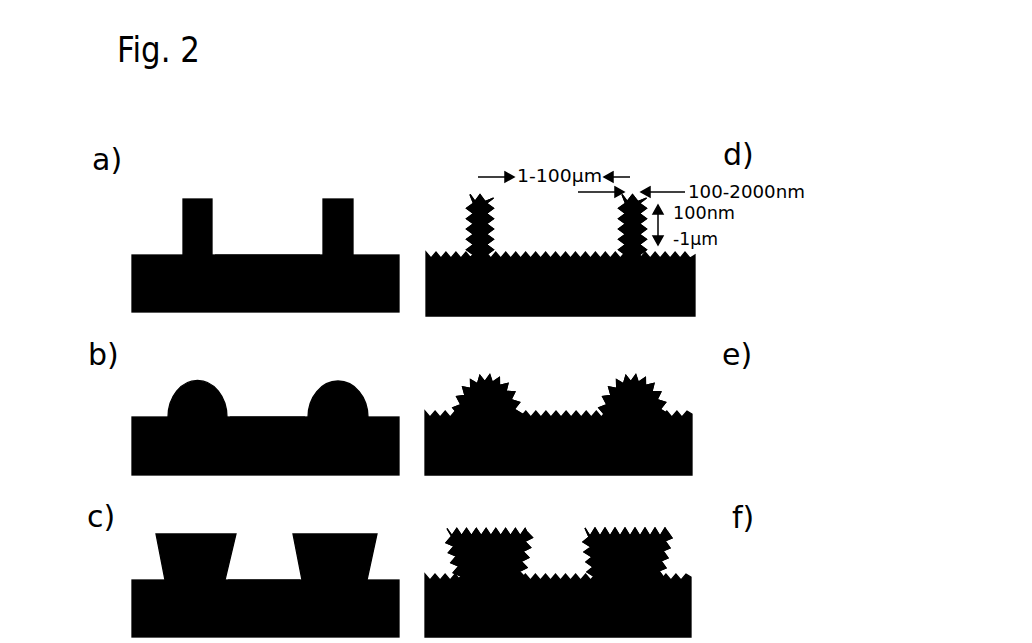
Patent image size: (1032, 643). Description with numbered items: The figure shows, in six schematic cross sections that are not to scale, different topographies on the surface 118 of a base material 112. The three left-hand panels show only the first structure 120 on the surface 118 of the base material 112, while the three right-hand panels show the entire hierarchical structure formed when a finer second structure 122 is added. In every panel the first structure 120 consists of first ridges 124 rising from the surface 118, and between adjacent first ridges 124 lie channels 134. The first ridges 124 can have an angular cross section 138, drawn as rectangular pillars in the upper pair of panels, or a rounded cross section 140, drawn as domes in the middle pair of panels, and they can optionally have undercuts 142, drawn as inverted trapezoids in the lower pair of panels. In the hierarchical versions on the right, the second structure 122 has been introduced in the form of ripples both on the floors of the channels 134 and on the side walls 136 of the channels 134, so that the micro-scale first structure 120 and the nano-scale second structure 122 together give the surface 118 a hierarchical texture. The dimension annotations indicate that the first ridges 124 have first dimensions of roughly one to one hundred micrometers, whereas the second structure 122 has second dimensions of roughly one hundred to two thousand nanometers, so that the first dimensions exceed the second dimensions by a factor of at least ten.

The base material 112 is at (132, 283).
The surface 118 is at (248, 255).
The first structure 120 is at (408, 355).
The first ridges 124 is at (408, 355).
The channels 134 is at (293, 227).
The angular cross section 138 is at (196, 199).
The rounded cross section 140 is at (197, 380).
The undercuts 142 is at (185, 534).
The second structure 122 is at (559, 389).
The side walls 136 is at (620, 222).